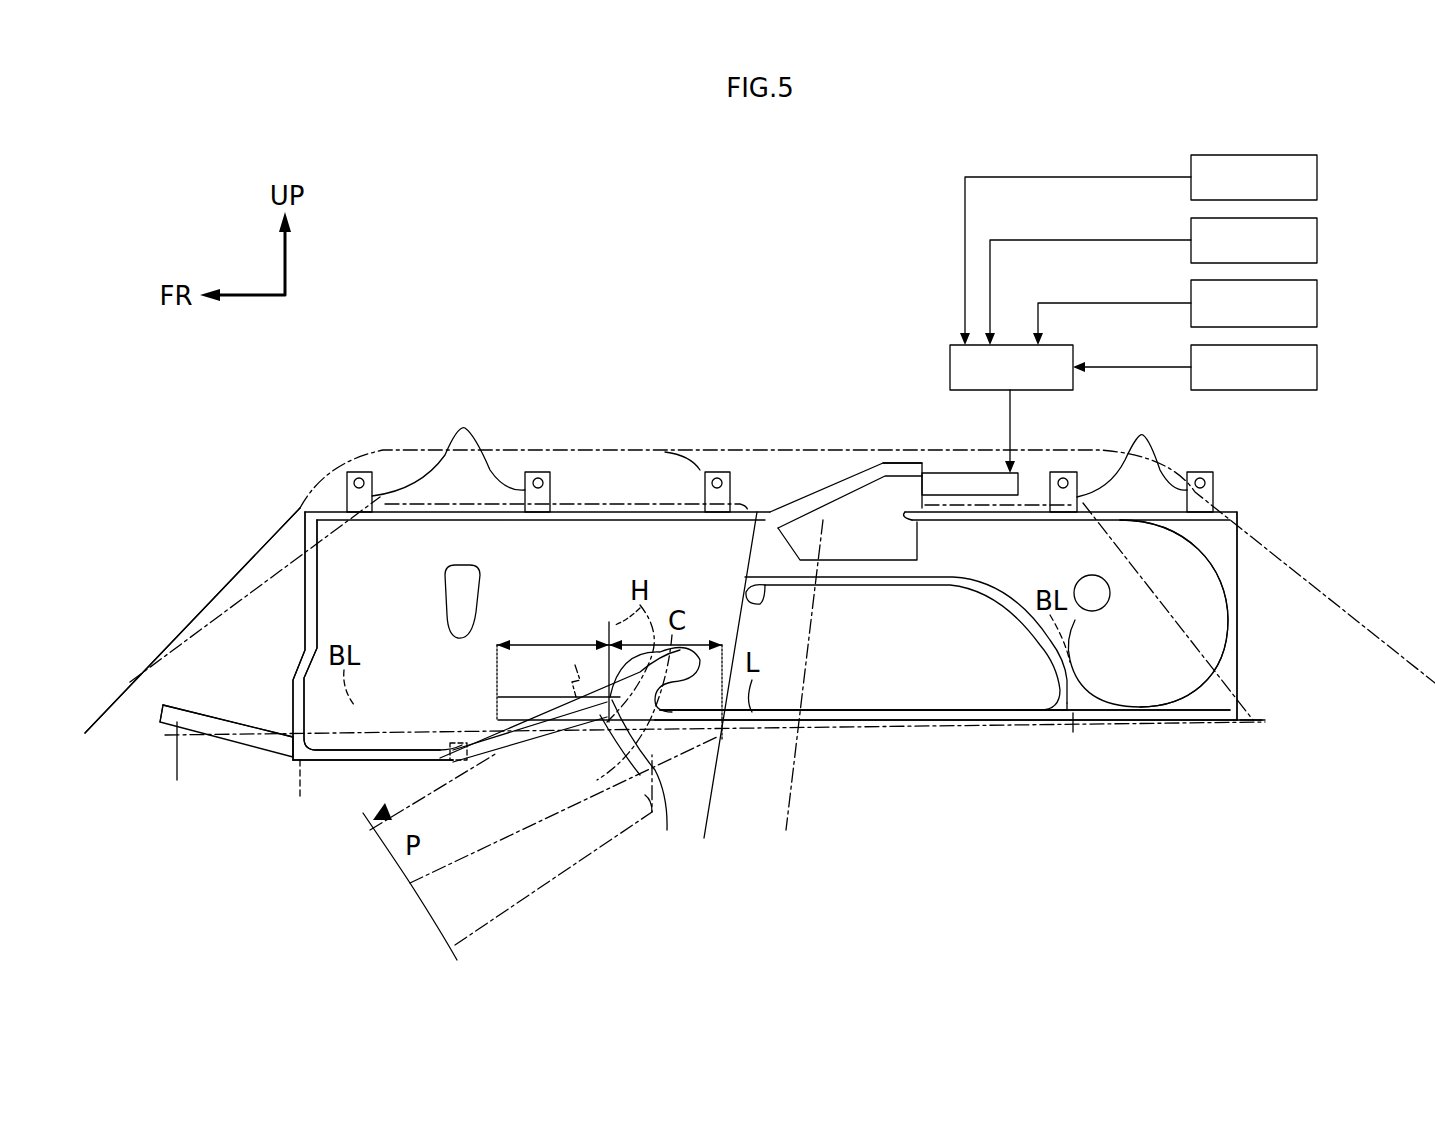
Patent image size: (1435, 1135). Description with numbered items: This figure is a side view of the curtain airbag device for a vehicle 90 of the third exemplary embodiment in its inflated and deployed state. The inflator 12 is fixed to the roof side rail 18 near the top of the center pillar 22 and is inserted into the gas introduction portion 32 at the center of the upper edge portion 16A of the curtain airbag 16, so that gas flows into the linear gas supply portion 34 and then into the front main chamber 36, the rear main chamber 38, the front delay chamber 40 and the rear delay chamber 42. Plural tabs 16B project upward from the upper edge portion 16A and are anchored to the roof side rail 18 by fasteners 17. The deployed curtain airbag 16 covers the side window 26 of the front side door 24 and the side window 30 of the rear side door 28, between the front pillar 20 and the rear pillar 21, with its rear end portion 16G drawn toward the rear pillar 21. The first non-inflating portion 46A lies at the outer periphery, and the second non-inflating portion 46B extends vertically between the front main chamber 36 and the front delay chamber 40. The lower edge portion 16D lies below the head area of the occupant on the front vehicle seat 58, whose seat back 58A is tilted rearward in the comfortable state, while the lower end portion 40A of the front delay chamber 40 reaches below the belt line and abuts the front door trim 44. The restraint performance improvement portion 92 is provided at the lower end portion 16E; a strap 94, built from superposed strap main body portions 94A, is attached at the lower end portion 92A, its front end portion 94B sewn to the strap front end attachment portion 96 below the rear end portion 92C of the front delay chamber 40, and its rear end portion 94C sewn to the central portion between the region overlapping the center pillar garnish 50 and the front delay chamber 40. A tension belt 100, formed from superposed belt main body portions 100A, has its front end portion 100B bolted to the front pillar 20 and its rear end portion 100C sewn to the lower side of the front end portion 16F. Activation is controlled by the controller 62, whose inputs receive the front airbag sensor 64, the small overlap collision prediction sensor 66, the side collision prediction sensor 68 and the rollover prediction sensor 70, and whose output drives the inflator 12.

The inflator 12 is at (950, 473).
The curtain airbag 16 is at (938, 728).
The upper edge portion 16A is at (610, 505).
The tabs 16B is at (462, 455).
The lower edge portion 16D is at (877, 722).
The lower end portion 16E is at (748, 712).
The front end portion 16F is at (303, 610).
The rear wall 16G is at (1238, 618).
The fasteners 17 is at (356, 480).
The roof side rail 18 is at (688, 452).
The front pillar 20 is at (218, 615).
The rear pillar 21 is at (1275, 530).
The center pillar 22 is at (815, 640).
The side door 24 is at (214, 700).
The side window 26 is at (265, 655).
The side door 28 is at (1262, 712).
The side window 30 is at (1250, 718).
The gas introduction portion 32 is at (890, 478).
The gas supply portion 34 is at (800, 516).
The front main chamber 36 is at (672, 574).
The rear main chamber 38 is at (1097, 640).
The front delay chamber 40 is at (358, 576).
The lower end portion 40A is at (355, 760).
The rear delay chamber 42 is at (948, 659).
The front door trim 44 is at (260, 795).
The first non-inflating portion 46A is at (1230, 590).
The second non-inflating portion 46B is at (478, 595).
The center pillar garnish 50 is at (795, 660).
The front vehicle seat 58 is at (560, 895).
The seat back 58A is at (580, 855).
The controller 62 is at (950, 364).
The front airbag sensor 64 is at (1317, 177).
The small overlap collision prediction sensor 66 is at (1317, 240).
The side collision prediction sensor 68 is at (1317, 303).
The rollover prediction sensor 70 is at (1317, 367).
The curtain airbag device for a vehicle 90 is at (527, 356).
The restraint performance improvement portion 92 is at (609, 628).
The lower end portion 92A is at (640, 770).
The end portion 92C is at (490, 712).
The strap 94 is at (500, 725).
The strap main body portion 94A is at (510, 738).
The end portion 94B is at (455, 760).
The end portion 94C is at (612, 752).
The strap front end attachment portion 96 is at (460, 770).
The tension belt 100 is at (232, 730).
The belt main body portion 100A is at (222, 720).
The front end portion 100B is at (165, 708).
The rear end portion 100C is at (303, 775).